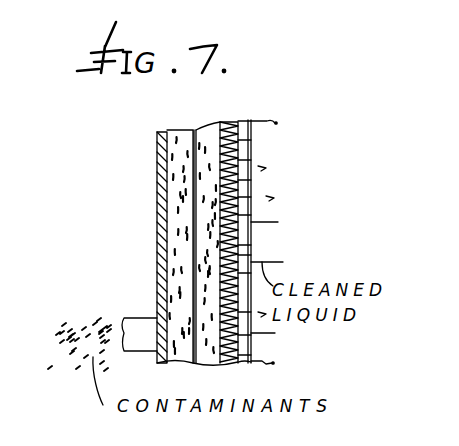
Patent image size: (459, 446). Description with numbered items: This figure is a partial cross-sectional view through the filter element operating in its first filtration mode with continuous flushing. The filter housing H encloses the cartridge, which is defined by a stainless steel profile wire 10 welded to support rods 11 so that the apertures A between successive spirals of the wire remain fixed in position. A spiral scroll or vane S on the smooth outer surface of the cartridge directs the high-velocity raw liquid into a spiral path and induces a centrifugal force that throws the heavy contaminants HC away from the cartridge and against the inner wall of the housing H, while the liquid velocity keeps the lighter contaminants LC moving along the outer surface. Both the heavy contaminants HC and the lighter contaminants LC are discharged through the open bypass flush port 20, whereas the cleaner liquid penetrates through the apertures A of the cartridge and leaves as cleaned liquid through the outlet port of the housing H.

The filter housing H is at (157, 181).
The heavy contaminants HC is at (183, 147).
The spiral scroll or vane S is at (193, 216).
The lighter contaminants LC is at (218, 126).
The profile wire 10 is at (249, 187).
The apertures A is at (248, 153).
The support rods 11 is at (249, 346).
The bypass flush port 20 is at (132, 318).